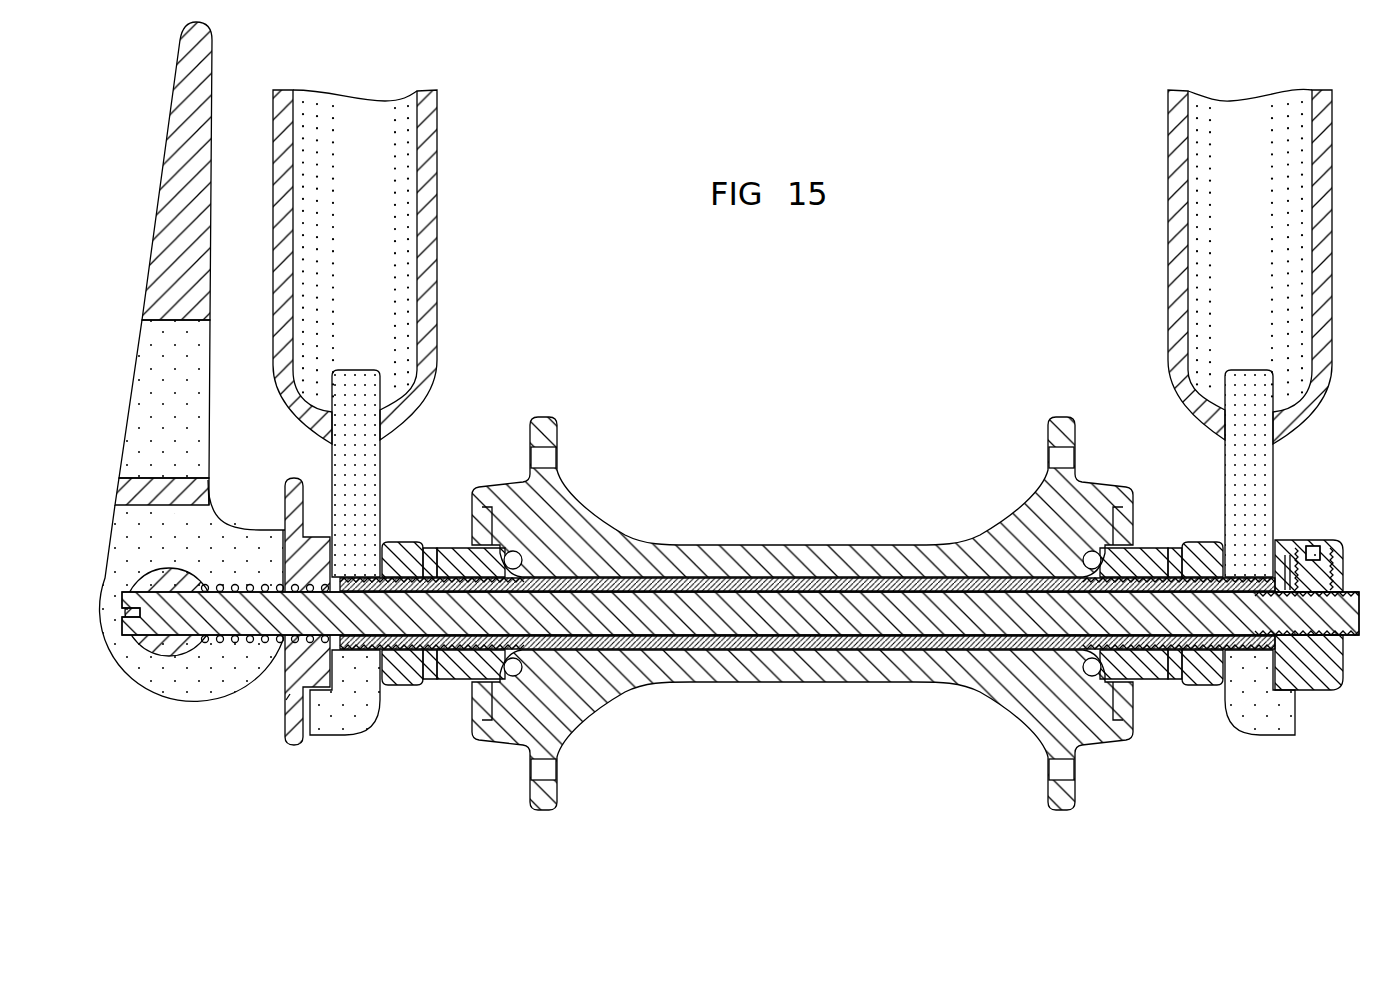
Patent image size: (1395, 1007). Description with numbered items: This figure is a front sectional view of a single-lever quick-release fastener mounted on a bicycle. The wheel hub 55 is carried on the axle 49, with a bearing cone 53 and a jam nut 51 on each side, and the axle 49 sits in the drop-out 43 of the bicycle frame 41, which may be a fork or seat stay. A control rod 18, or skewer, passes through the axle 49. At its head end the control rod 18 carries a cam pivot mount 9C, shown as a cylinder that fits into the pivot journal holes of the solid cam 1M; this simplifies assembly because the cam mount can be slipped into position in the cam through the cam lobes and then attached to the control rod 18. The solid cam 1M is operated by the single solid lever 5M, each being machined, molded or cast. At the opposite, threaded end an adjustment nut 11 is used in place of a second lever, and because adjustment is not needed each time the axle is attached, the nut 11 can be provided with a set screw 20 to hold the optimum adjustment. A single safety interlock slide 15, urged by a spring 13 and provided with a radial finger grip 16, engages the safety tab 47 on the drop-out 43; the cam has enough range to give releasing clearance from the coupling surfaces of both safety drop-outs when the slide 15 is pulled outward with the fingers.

The solid lever 5M is at (156, 220).
The solid cam 1M is at (148, 690).
The cam pivot mount for solid cam on head of control rod 9C is at (150, 566).
The bicycle frame 41 is at (383, 147).
The drop-out 43 is at (380, 486).
The spring 13 is at (240, 586).
The safety interlock slide 15 is at (276, 709).
The radial finger grip 16 is at (285, 746).
The control rod 18 is at (765, 607).
The safety tab 47 is at (318, 728).
The axle 49 is at (852, 562).
The jam nut 51 is at (398, 687).
The bearing cone 53 is at (450, 679).
The hub 55 is at (995, 525).
The set screw 20 is at (1313, 546).
The adjustment nut 11 is at (1340, 690).